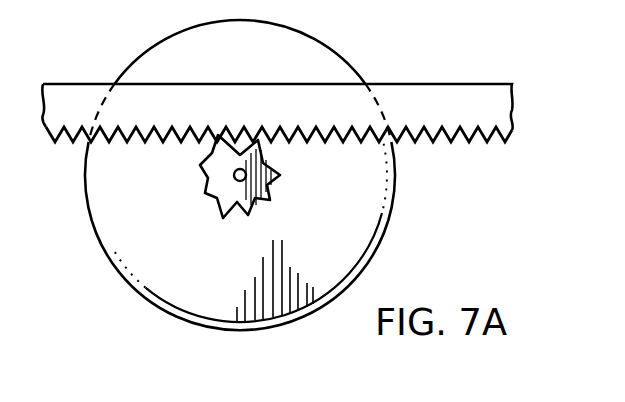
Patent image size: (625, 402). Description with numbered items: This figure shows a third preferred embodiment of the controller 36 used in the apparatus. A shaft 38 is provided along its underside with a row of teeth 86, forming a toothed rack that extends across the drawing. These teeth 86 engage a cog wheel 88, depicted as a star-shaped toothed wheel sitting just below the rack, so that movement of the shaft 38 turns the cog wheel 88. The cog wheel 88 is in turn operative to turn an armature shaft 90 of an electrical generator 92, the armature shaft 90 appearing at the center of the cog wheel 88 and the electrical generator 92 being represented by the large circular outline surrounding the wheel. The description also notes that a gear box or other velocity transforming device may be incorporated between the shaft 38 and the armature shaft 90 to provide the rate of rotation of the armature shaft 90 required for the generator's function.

The controller 36 is at (452, 248).
The shaft 38 is at (468, 100).
The teeth 86 is at (475, 143).
The cog wheel 88 is at (280, 180).
The armature shaft 90 is at (233, 178).
The electrical generator 92 is at (163, 284).